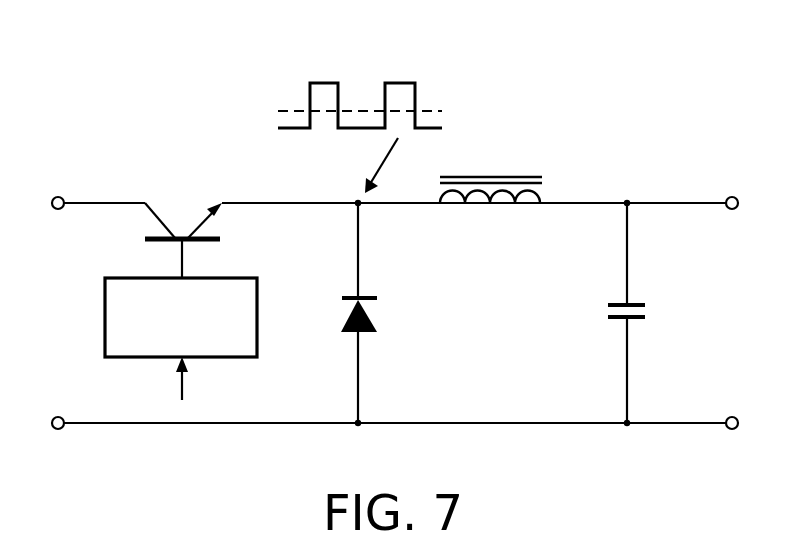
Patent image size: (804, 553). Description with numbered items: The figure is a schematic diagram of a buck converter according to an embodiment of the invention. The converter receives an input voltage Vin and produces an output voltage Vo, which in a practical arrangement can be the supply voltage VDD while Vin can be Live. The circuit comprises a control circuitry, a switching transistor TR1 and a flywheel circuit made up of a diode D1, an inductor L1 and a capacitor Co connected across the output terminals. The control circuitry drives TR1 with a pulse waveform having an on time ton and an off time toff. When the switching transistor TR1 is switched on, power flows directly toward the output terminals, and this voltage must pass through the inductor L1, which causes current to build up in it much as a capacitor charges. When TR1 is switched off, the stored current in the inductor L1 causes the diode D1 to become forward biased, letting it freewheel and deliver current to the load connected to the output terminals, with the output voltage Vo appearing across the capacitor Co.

The switching transistor TR1 is at (183, 224).
The inductor L1 is at (491, 176).
The diode D1 is at (378, 313).
The capacitor Co is at (645, 313).
The input voltage Vin is at (57, 181).
The output voltage Vo is at (460, 288).
The off time toff is at (377, 75).
The on time ton is at (358, 140).